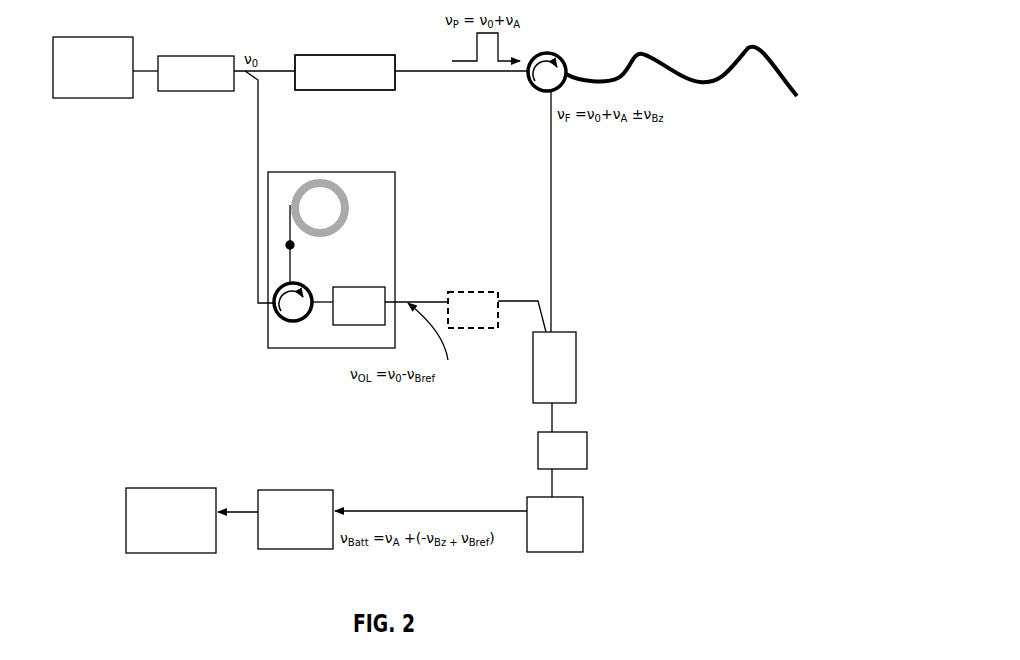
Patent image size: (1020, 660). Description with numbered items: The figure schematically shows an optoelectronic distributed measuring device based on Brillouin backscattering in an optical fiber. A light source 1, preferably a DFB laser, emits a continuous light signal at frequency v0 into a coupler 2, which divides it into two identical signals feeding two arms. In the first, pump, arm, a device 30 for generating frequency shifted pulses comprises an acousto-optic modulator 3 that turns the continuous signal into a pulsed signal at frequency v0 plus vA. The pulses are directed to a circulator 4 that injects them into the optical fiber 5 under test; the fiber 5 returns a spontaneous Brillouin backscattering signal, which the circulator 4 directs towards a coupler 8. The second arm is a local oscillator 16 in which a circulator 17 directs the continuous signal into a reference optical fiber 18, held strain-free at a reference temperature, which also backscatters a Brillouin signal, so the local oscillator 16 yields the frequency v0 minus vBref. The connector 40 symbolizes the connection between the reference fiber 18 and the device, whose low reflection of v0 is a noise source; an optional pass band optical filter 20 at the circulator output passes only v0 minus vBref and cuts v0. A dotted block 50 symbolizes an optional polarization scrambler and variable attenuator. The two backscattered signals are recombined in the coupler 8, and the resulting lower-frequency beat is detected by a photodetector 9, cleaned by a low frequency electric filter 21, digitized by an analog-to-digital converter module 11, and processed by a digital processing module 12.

The light source 1 is at (93, 67).
The coupler 2 is at (196, 73).
The acousto-optic modulator 3 is at (345, 72).
The device for generating frequency shifted pulses 30 is at (378, 55).
The circulator 4 is at (549, 54).
The optical fiber 5 is at (637, 53).
The local oscillator 16 is at (318, 172).
The reference optical fiber 18 is at (345, 192).
The connector 40 is at (284, 245).
The circulator 17 is at (283, 318).
The pass band optical filter 20 is at (359, 306).
The block 50 is at (473, 310).
The coupler 8 is at (554, 367).
The photodetector 9 is at (562, 450).
The low frequency electric filter 21 is at (555, 524).
The analog-to-digital converter module 11 is at (295, 519).
The digital processing module 12 is at (171, 520).